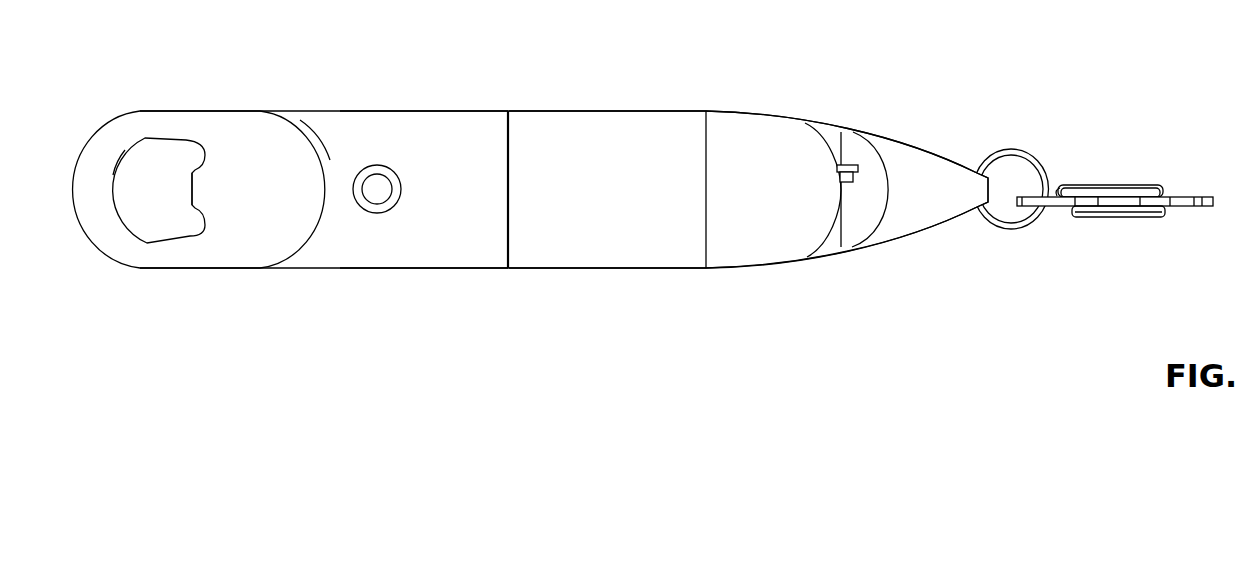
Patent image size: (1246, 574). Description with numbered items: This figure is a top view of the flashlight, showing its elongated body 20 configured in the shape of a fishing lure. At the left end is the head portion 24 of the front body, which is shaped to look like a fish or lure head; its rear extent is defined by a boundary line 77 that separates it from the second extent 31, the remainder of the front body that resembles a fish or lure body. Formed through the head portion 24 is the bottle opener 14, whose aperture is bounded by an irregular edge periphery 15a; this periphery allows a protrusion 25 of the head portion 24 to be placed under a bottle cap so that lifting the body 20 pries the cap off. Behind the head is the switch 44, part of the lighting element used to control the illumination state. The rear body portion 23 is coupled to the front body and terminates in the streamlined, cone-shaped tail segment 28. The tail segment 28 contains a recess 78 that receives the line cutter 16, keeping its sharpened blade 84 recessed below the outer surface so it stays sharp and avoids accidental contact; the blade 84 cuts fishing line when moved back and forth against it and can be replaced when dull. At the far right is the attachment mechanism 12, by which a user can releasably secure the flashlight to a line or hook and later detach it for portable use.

The attachment mechanism 12 is at (1109, 127).
The bottle opener 14 is at (163, 212).
The irregular edge periphery 15a is at (110, 187).
The line cutter 16 is at (847, 92).
The elongated body 20 is at (544, 46).
The second body portion 23 is at (655, 122).
The head portion 24 is at (249, 128).
The protrusion 25 is at (205, 187).
The tail segment 28 is at (770, 128).
The second extent 31 is at (453, 122).
The switch 44 is at (377, 190).
The boundary line 77 is at (322, 147).
The recess 78 is at (835, 282).
The blade 84 is at (848, 162).